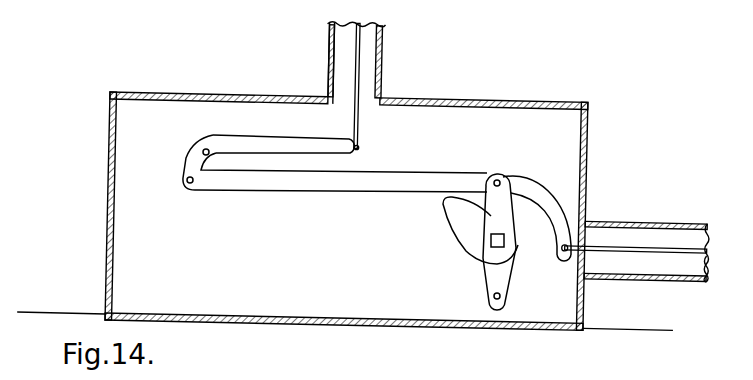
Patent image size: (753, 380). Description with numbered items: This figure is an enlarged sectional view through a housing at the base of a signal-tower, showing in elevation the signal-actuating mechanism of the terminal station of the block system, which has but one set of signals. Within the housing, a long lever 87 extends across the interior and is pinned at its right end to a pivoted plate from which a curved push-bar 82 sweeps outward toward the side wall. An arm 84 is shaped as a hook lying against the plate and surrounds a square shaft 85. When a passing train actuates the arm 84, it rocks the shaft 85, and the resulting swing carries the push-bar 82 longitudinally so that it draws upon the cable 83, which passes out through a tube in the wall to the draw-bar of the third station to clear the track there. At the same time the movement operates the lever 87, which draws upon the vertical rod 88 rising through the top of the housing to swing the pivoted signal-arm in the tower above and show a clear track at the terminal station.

The push-bar 82 is at (542, 188).
The cable 83 is at (693, 250).
The arm 84 is at (468, 213).
The shaft 85 is at (491, 243).
The lever 87 is at (275, 133).
The rod 88 is at (355, 62).